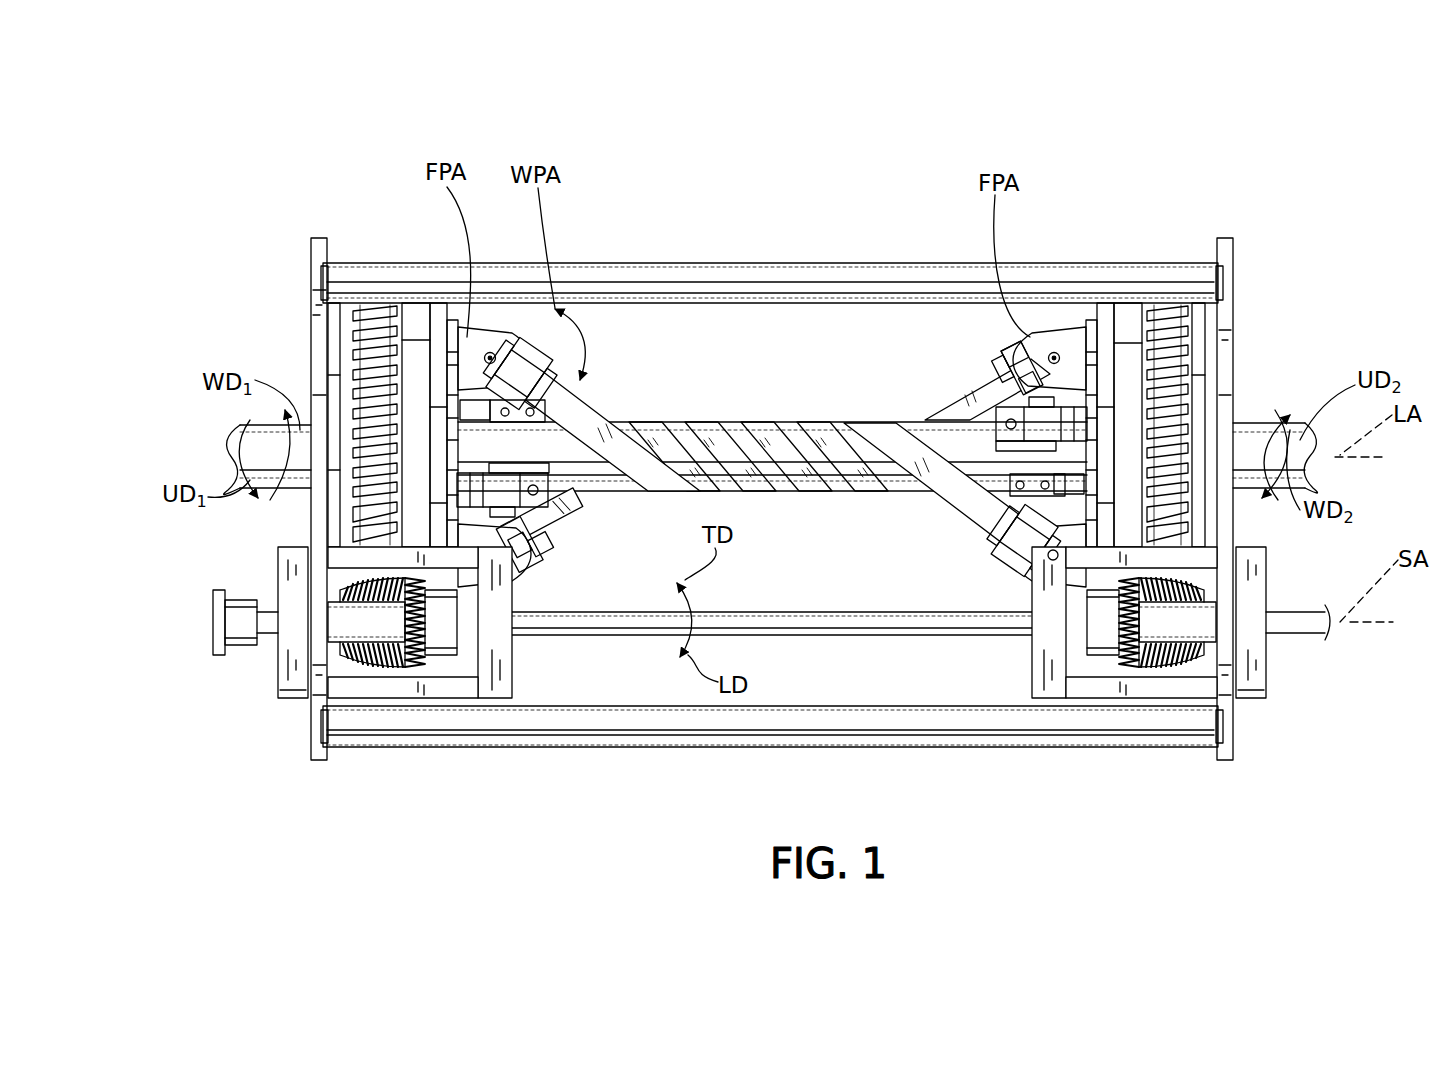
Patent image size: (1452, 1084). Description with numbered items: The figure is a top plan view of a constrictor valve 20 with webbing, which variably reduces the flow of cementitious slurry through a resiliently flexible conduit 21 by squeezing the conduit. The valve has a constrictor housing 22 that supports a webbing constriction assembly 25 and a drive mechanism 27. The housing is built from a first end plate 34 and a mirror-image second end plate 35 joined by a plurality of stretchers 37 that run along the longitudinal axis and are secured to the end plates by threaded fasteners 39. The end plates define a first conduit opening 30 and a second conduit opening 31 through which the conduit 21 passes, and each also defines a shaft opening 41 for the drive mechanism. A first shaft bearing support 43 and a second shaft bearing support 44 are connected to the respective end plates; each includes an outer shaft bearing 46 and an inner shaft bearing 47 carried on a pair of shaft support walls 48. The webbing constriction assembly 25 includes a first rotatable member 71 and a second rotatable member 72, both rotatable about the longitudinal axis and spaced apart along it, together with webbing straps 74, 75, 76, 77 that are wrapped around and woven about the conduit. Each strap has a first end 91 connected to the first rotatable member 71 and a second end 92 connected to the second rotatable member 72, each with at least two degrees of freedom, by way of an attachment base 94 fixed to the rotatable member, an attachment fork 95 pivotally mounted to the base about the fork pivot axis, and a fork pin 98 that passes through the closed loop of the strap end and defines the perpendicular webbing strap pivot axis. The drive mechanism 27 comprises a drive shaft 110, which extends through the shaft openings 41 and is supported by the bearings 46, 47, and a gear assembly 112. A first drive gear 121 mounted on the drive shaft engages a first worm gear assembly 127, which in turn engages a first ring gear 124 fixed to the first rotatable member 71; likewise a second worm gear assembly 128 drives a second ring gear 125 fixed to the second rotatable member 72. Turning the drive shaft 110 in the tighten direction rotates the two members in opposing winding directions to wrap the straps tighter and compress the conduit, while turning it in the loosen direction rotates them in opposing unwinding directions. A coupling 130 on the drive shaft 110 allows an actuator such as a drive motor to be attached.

The constrictor valve 20 is at (270, 196).
The resiliently flexible conduit 21 is at (240, 440).
The constrictor housing 22 is at (383, 259).
The webbing constriction assembly 25 is at (583, 379).
The drive mechanism 27 is at (240, 652).
The first conduit opening 30 is at (310, 420).
The second conduit opening 31 is at (1238, 422).
The first end plate 34 is at (317, 325).
The second end plate 35 is at (1225, 352).
The stretchers 37 is at (678, 268).
The threaded fasteners 39 is at (315, 283).
The shaft opening 41 is at (333, 662).
The first shaft bearing support 43 is at (293, 690).
The second shaft bearing support 44 is at (1256, 700).
The outer shaft bearing 46 is at (290, 580).
The inner shaft bearing 47 is at (495, 690).
The shaft support walls 48 is at (345, 555).
The first rotatable member 71 is at (438, 317).
The second rotatable member 72 is at (1105, 337).
The webbing strap 74 is at (588, 420).
The webbing strap 75 is at (783, 430).
The webbing strap 76 is at (725, 430).
The webbing strap 77 is at (663, 427).
The first end 91 is at (548, 345).
The second end 92 is at (980, 390).
The attachment base 94 is at (477, 342).
The attachment fork 95 is at (490, 352).
The fork pin 98 is at (522, 352).
The drive shaft 110 is at (760, 612).
The gear assembly 112 is at (402, 672).
The first drive gear 121 is at (443, 655).
The first ring gear 124 is at (370, 342).
The second ring gear 125 is at (1163, 347).
The first worm gear assembly 127 is at (370, 672).
The second worm gear assembly 128 is at (1173, 676).
The coupling 130 is at (218, 610).